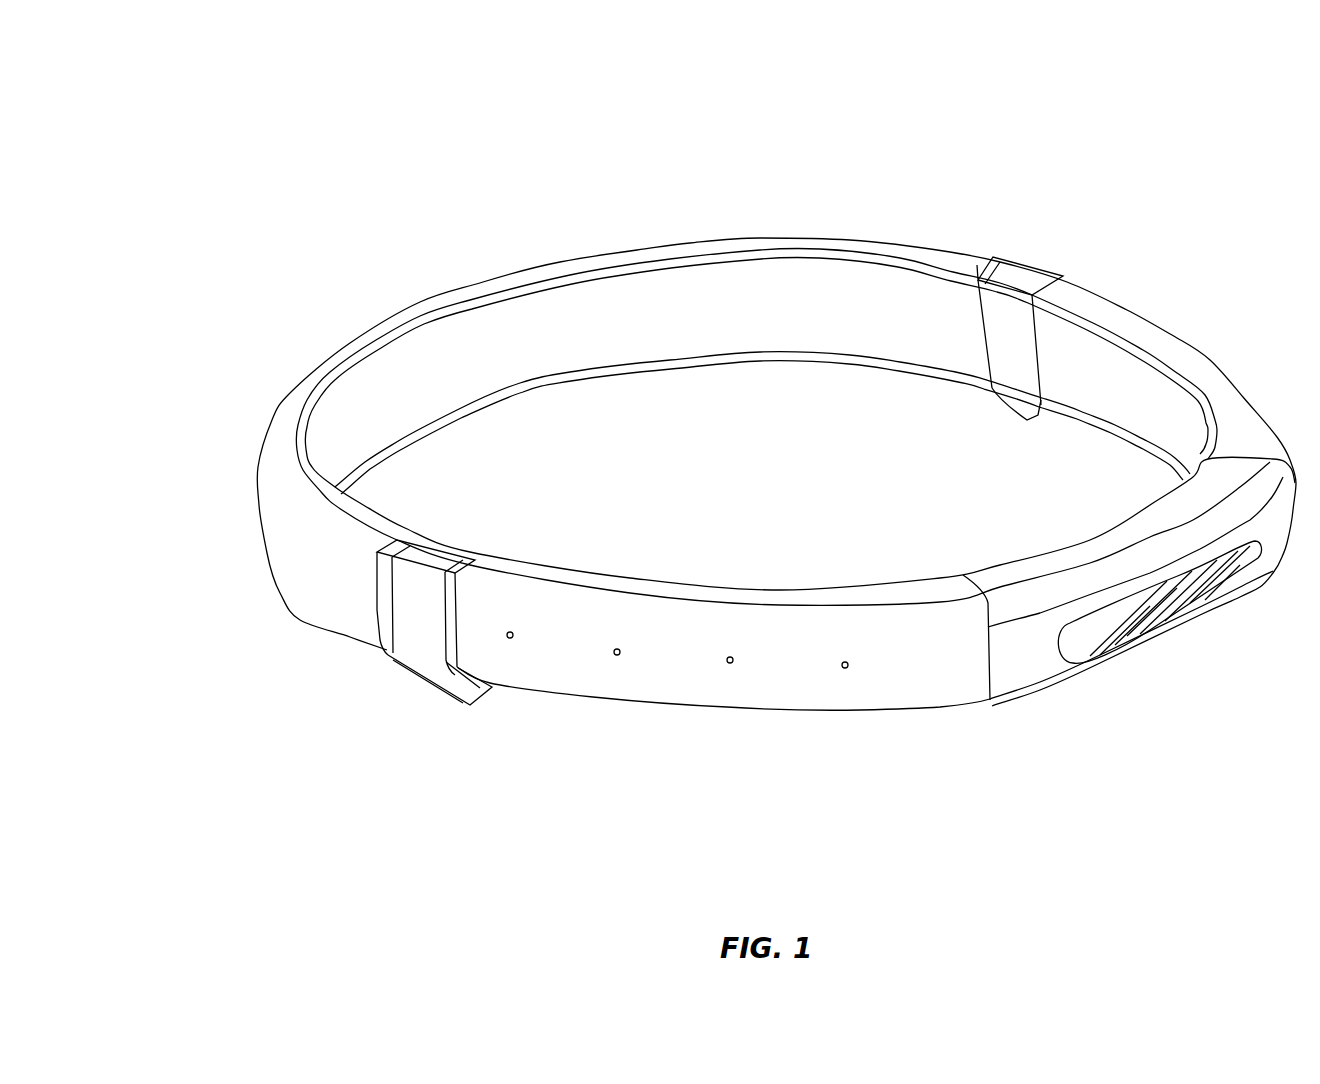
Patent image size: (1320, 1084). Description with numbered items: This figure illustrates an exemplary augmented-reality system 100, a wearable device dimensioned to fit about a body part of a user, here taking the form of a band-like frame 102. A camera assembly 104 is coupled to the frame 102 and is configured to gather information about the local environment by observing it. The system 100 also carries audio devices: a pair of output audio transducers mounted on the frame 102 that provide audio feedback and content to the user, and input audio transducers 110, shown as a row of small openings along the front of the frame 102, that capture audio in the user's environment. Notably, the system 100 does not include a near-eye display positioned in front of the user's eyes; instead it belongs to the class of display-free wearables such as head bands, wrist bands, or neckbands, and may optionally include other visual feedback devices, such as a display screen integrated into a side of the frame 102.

The AR system 100 is at (180, 146).
The frame 102 is at (723, 240).
The camera assembly 104 is at (1157, 640).
The input audio transducers 110 is at (843, 727).